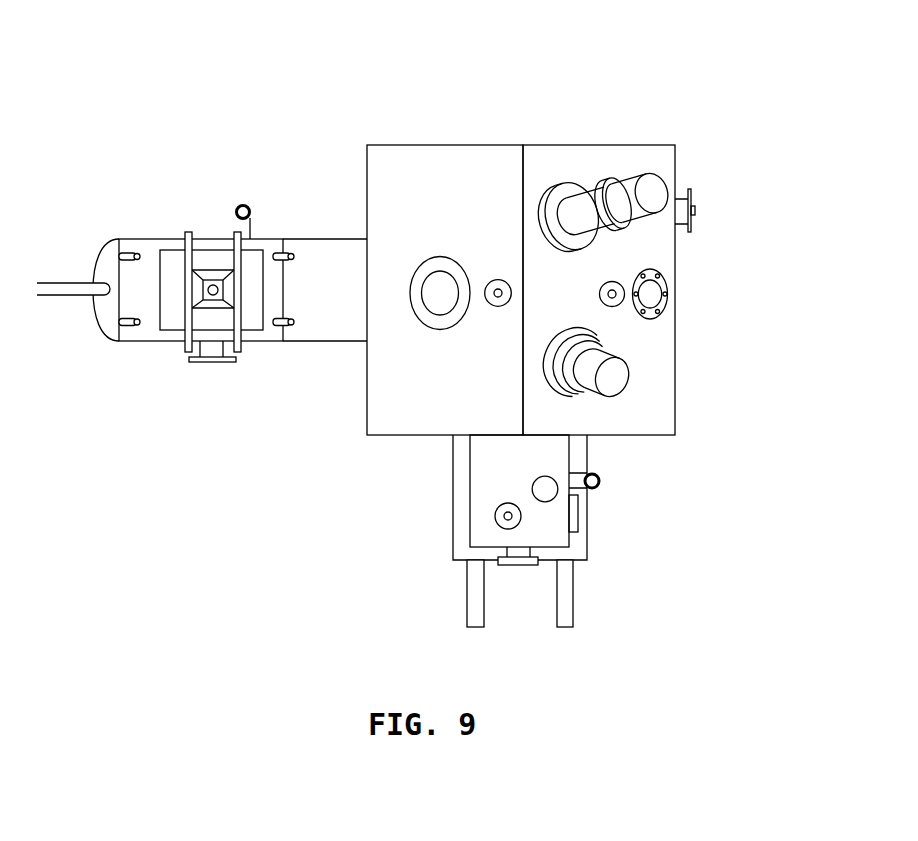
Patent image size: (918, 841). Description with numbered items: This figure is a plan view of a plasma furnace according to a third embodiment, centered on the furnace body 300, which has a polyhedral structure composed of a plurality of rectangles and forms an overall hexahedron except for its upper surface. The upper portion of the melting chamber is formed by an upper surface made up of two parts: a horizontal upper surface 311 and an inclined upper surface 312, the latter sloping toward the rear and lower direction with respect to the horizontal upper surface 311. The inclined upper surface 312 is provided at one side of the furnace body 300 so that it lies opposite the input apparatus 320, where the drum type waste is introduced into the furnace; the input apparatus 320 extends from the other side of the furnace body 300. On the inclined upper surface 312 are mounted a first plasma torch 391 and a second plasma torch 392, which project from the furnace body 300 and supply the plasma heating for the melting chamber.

The furnace body 300 is at (678, 474).
The horizontal upper surface 311 is at (443, 183).
The inclined upper surface 312 is at (579, 146).
The input apparatus 320 is at (312, 240).
The first plasma torch 391 is at (642, 375).
The second plasma torch 392 is at (656, 188).